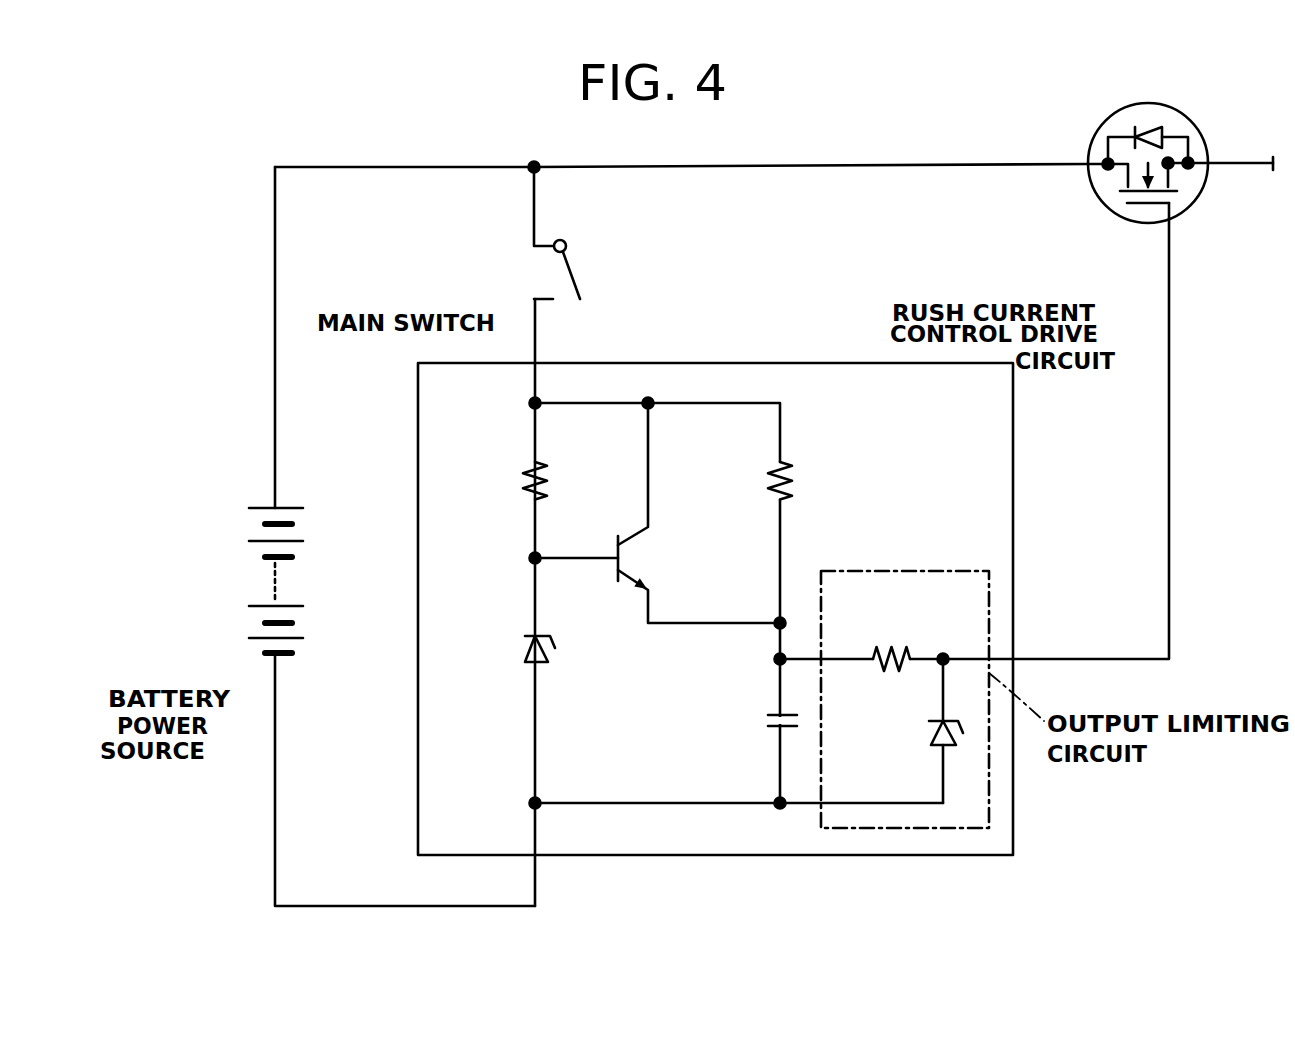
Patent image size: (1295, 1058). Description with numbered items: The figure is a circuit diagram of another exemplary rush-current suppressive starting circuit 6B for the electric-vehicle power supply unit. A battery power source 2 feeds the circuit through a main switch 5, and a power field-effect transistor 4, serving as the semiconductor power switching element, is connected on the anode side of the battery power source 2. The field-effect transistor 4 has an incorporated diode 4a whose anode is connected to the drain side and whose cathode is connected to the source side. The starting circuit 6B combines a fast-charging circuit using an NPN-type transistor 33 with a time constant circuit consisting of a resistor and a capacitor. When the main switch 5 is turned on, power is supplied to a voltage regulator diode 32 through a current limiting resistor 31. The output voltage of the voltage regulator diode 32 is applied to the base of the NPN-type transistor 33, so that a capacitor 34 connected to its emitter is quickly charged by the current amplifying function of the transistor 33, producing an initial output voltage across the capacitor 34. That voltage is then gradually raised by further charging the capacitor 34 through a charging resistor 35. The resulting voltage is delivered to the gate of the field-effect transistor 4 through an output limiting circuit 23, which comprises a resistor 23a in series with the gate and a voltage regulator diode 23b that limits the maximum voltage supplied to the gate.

The battery power source 2 is at (258, 588).
The power field-effect transistor 4 is at (1158, 131).
The diode 4a is at (1144, 128).
The main switch 5 is at (560, 275).
The rush-current suppressive starting circuit 6B is at (762, 360).
The output limiting circuit 23 is at (912, 568).
The resistor 23a is at (893, 647).
The voltage regulator diode 23b is at (928, 731).
The current limiting resistor 31 is at (520, 483).
The voltage regulator diode 32 is at (520, 650).
The NPN-type transistor 33 is at (636, 559).
The capacitor 34 is at (766, 722).
The charging resistor 35 is at (766, 479).